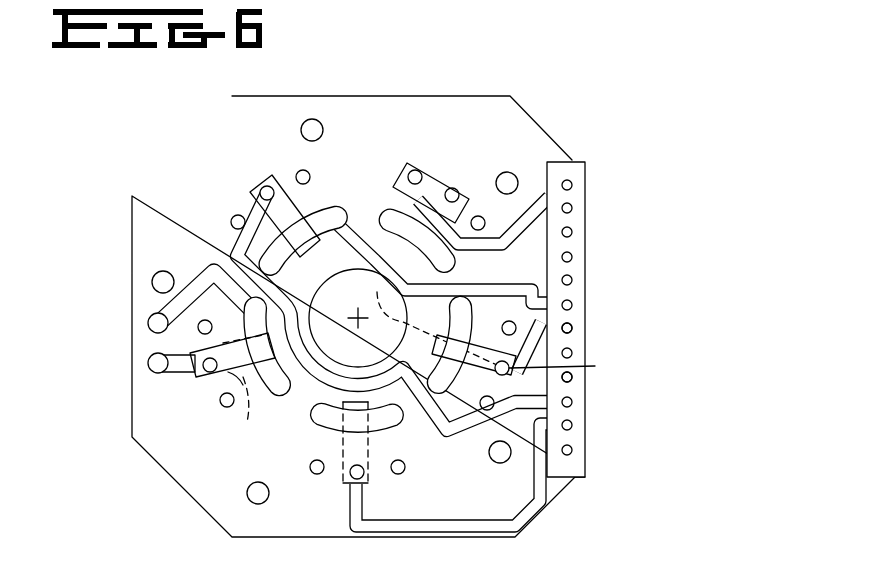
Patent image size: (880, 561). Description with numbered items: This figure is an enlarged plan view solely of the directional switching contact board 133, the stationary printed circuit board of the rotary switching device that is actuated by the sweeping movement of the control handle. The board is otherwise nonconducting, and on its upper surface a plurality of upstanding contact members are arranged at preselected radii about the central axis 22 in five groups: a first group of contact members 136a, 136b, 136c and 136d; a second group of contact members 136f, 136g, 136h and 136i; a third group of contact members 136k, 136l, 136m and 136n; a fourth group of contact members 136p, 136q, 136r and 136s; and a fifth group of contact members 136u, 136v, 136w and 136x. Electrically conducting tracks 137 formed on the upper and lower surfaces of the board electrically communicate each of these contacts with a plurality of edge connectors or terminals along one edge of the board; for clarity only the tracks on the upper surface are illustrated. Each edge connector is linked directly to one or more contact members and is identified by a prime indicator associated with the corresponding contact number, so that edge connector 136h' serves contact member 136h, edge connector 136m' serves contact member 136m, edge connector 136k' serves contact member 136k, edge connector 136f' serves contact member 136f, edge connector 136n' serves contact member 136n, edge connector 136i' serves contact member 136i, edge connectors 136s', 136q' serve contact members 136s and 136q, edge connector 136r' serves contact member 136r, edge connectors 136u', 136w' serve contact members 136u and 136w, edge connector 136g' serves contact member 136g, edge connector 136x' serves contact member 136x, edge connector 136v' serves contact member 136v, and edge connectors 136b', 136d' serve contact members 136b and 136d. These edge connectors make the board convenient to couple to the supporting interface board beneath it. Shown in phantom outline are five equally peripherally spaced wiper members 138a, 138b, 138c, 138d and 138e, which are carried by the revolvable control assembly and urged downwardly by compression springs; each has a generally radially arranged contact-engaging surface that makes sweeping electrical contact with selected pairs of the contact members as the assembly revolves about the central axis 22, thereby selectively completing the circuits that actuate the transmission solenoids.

The directional switching contact board 133 is at (188, 142).
The central axis 22 is at (355, 315).
The electrically conducting tracks 137 is at (210, 268).
The contact member 136a is at (198, 330).
The contact member 136b is at (133, 387).
The edge connector 136b' is at (101, 371).
The contact member 136c is at (222, 405).
The contact member 136d is at (274, 363).
The edge connector 136d' is at (104, 316).
The contact member 136f is at (265, 159).
The contact member 136g is at (222, 184).
The contact member 136h is at (194, 215).
The contact member 136i is at (303, 250).
The contact member 136k is at (488, 210).
The contact member 136l is at (456, 190).
The contact member 136m is at (379, 158).
The contact member 136n is at (395, 233).
The contact member 136p is at (490, 400).
The contact member 136r is at (495, 317).
The contact member 136s is at (401, 344).
The contact member 136u is at (302, 482).
The contact member 136v is at (321, 498).
The contact member 136w is at (422, 488).
The contact member 136x is at (341, 430).
The edge connector 136h' is at (614, 169).
The edge connector 136m' is at (617, 197).
The edge connector 136k' is at (616, 226).
The edge connector 136f' is at (613, 251).
The edge connector 136n' is at (616, 280).
The edge connector 136i' is at (613, 303).
The edge connector 136s' is at (647, 329).
The edge connector 136q' is at (567, 328).
The edge connector 136r' is at (614, 354).
The contact member 136q is at (570, 372).
The edge connector 136u' is at (650, 387).
The edge connector 136w' is at (567, 377).
The edge connector 136g' is at (619, 411).
The edge connector 136x' is at (622, 433).
The edge connector 136v' is at (622, 462).
The wiper member 138a is at (238, 397).
The wiper member 138b is at (278, 222).
The wiper member 138c is at (437, 182).
The wiper member 138d is at (420, 322).
The wiper member 138e is at (345, 402).